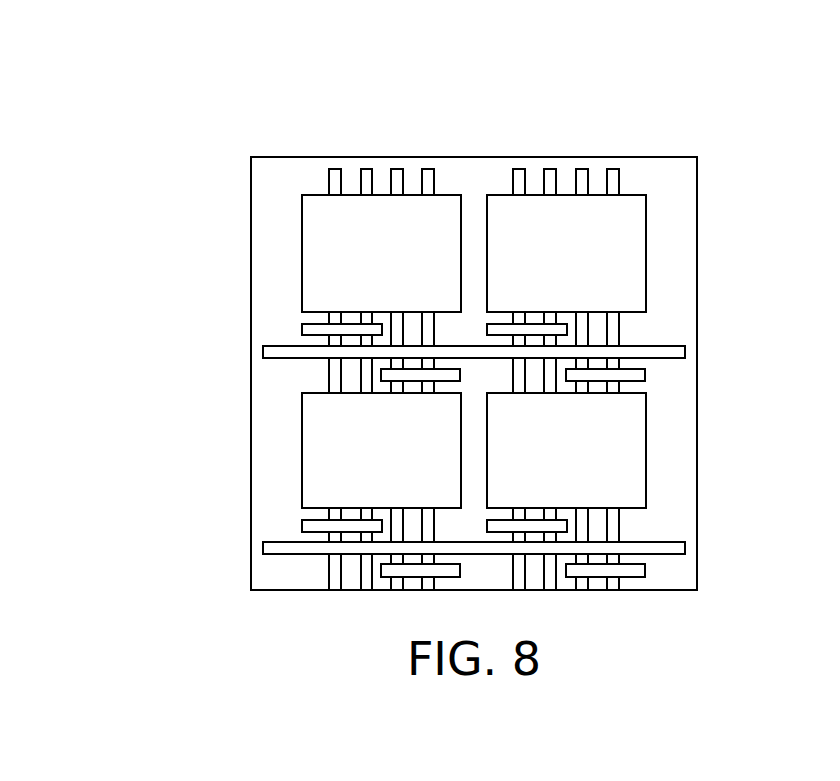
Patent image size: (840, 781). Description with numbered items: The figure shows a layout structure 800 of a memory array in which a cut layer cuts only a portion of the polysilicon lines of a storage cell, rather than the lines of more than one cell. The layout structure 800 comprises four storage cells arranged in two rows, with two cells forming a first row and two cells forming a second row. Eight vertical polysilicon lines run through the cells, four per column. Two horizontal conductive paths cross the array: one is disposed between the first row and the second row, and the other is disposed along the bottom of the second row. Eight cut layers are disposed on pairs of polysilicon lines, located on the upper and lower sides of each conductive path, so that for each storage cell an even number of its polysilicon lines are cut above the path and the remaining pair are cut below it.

The layout structure 800 is at (152, 89).